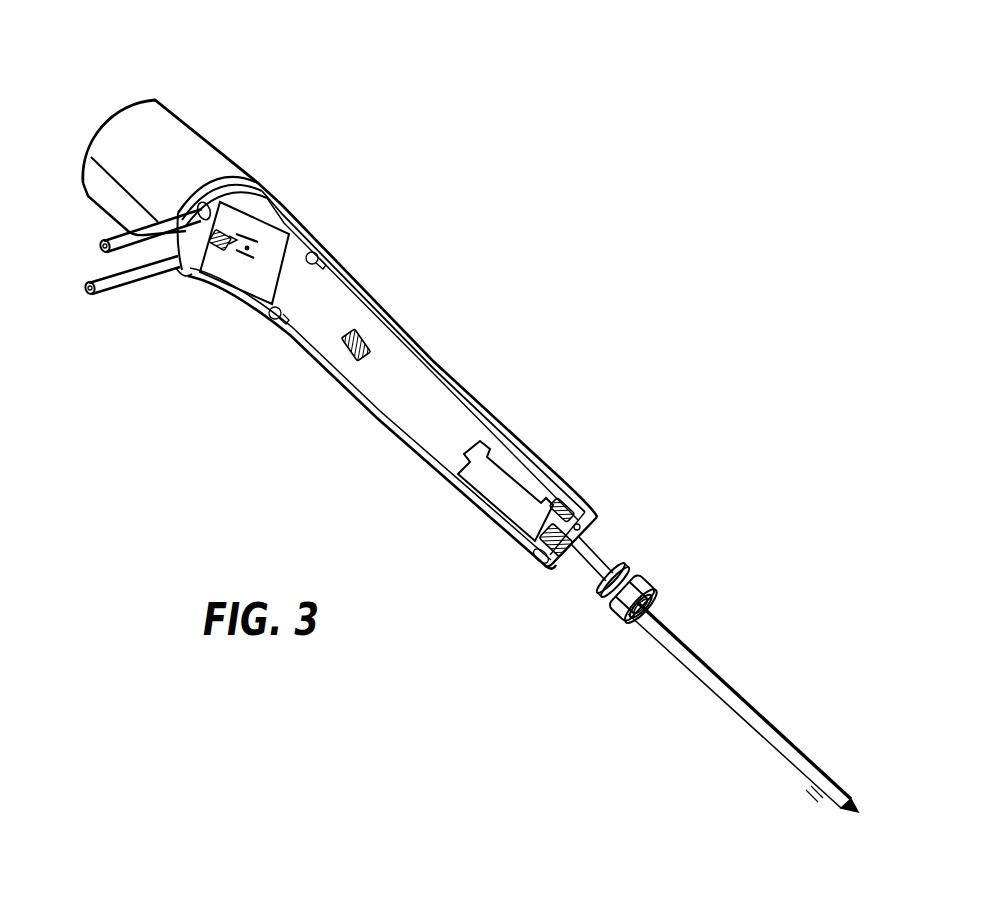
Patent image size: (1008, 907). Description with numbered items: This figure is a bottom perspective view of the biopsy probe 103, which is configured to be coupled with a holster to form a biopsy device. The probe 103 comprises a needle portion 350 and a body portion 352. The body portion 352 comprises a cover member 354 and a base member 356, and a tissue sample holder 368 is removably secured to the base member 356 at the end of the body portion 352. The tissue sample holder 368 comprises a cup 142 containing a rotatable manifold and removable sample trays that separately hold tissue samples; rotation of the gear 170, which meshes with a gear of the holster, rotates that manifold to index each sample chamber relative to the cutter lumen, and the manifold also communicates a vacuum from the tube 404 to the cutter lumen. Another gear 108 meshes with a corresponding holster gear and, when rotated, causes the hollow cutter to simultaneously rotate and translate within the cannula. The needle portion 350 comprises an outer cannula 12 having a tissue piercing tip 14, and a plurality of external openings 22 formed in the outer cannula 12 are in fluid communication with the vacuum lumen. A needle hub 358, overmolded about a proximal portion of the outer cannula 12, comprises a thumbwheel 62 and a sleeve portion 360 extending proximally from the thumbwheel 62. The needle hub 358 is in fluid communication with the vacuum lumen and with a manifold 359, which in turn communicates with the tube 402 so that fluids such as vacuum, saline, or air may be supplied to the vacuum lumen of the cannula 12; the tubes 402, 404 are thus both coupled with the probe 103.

The tissue sample holder 368 is at (212, 95).
The cup 142 is at (187, 153).
The biopsy probe 103 is at (540, 192).
The tube 402 is at (100, 240).
The tube 404 is at (88, 294).
The gear 170 is at (218, 246).
The gear 108 is at (358, 330).
The body portion 352 is at (500, 362).
The base member 356 is at (403, 402).
The cover member 354 is at (570, 498).
The manifold 359 is at (507, 495).
The sleeve portion 360 is at (603, 558).
The needle hub 358 is at (575, 597).
The needle portion 350 is at (730, 640).
The thumbwheel 62 is at (620, 627).
The outer cannula 12 is at (730, 697).
The external openings 22 is at (822, 790).
The tissue piercing tip 14 is at (850, 813).